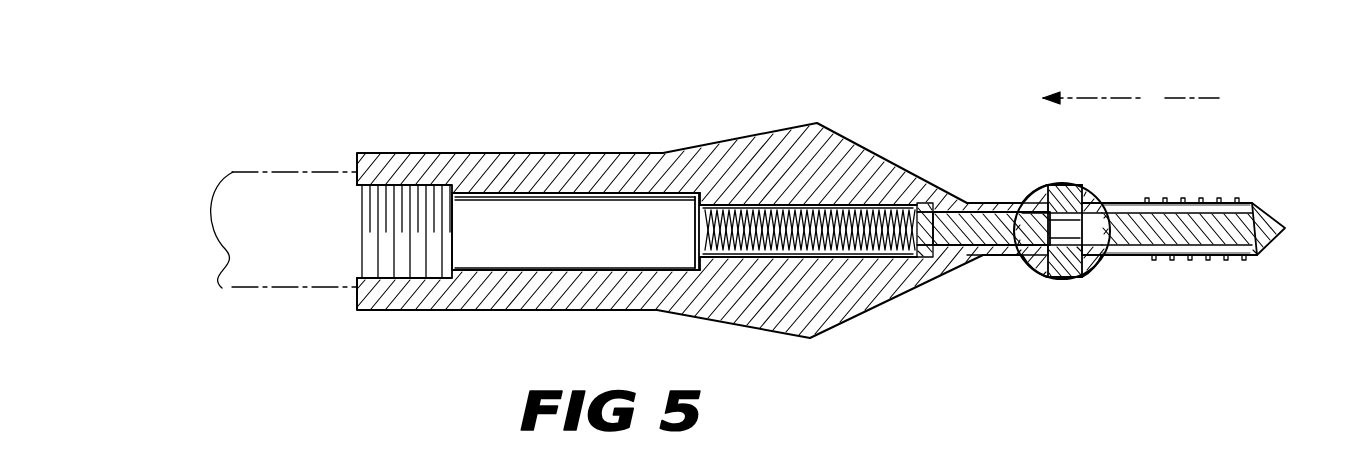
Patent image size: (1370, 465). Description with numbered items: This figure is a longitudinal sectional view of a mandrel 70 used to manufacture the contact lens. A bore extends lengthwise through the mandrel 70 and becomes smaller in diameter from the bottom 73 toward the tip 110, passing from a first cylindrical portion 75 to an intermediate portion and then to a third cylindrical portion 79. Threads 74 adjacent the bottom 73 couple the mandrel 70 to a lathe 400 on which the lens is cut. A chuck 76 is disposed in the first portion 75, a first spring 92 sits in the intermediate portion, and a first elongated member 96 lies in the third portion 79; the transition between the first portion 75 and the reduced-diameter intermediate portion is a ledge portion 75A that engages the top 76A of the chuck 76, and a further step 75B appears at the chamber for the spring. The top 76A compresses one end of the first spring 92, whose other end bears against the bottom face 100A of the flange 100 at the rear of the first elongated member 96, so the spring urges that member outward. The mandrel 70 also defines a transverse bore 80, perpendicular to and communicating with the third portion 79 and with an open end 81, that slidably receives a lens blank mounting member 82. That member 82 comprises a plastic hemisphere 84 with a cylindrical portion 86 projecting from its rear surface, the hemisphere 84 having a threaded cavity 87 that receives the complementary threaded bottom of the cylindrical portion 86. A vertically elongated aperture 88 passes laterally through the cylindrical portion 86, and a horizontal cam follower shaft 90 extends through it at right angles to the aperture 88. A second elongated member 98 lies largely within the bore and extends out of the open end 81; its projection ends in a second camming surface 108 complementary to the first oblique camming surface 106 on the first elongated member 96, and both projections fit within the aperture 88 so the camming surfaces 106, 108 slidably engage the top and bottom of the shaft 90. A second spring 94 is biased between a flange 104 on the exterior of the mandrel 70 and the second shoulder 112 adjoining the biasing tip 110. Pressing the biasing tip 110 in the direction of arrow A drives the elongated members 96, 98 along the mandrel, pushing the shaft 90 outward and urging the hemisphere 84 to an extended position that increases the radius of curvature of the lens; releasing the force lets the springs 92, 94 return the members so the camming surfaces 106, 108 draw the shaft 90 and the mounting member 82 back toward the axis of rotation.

The mandrel 70 is at (417, 60).
The lathe 400 is at (217, 173).
The bottom 73 is at (355, 163).
The threads 74 is at (400, 273).
The first cylindrical portion 75 is at (557, 200).
The chuck 76 is at (597, 246).
The top of the chuck 76A is at (690, 200).
The ledge portion 75A is at (688, 215).
The spring bore 75B is at (922, 212).
The first spring 92 is at (878, 205).
The bottom face 100A is at (918, 204).
The flange 100 is at (905, 262).
The first elongated member 96 is at (975, 229).
The third cylindrical portion 79 is at (990, 255).
The vertically elongated aperture 88 is at (1037, 210).
The transverse bore 80 is at (1057, 190).
The cylindrical portion 86 is at (1066, 195).
The cam follower shaft 90 is at (1100, 213).
The lens blank mounting member 82 is at (1050, 280).
The plastic hemisphere 84 is at (1047, 257).
The threaded cavity 87 is at (1077, 263).
The first oblique camming surface 106 is at (1082, 250).
The second camming surface 108 is at (1118, 202).
The open end 81 is at (1207, 255).
The flange 104 is at (1140, 200).
The second elongated member 98 is at (1230, 207).
The second spring 94 is at (1233, 258).
The second shoulder 112 is at (1247, 256).
The biasing tip 110 is at (1287, 227).